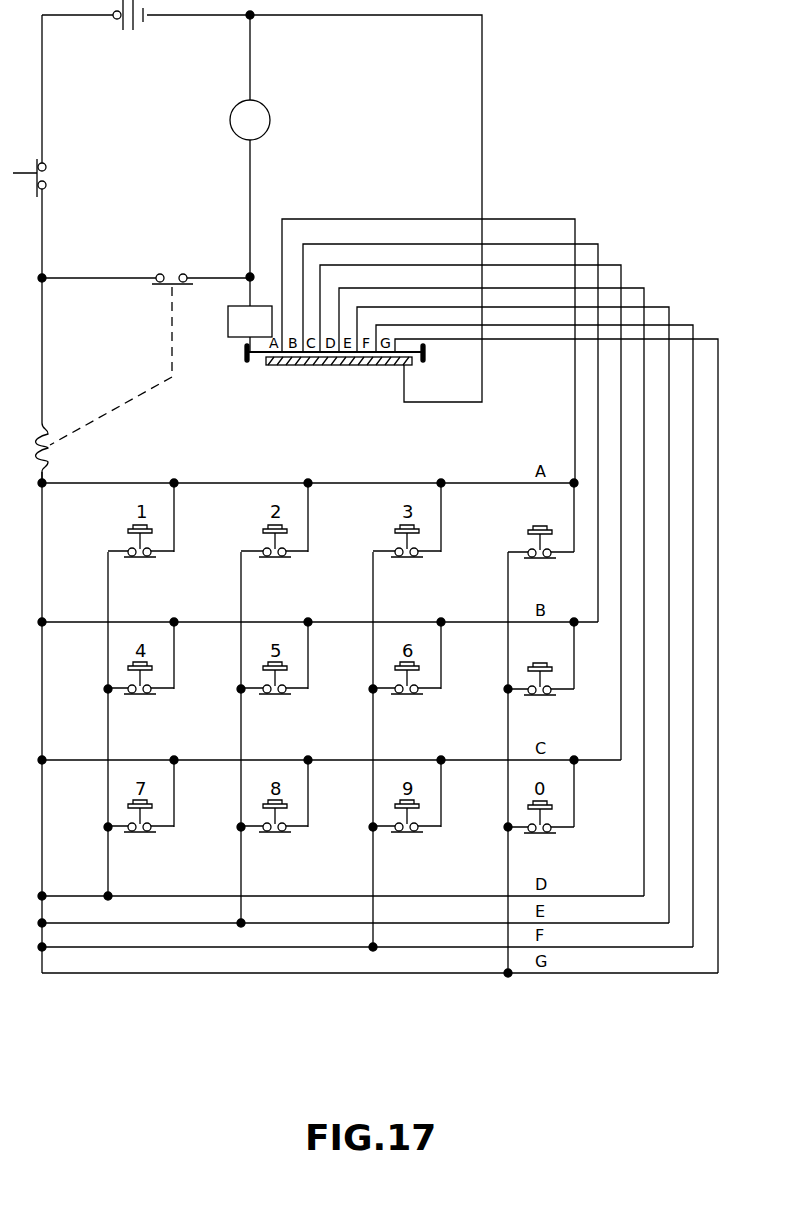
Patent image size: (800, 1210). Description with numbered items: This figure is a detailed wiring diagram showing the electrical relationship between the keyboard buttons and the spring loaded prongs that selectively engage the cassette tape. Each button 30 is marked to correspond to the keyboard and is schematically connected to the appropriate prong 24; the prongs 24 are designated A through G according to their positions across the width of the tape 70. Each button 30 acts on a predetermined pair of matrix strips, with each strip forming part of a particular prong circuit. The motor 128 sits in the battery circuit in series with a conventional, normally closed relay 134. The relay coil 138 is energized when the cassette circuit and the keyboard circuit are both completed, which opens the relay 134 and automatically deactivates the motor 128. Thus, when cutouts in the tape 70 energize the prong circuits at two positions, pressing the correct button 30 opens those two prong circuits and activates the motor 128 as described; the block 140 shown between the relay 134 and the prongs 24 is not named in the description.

The prong 24 is at (285, 357).
The button 30 is at (128, 531).
The tape 70 is at (252, 362).
The motor 128 is at (268, 112).
The relay 134 is at (172, 287).
The relay coil 138 is at (50, 462).
The contact block 140 is at (228, 333).